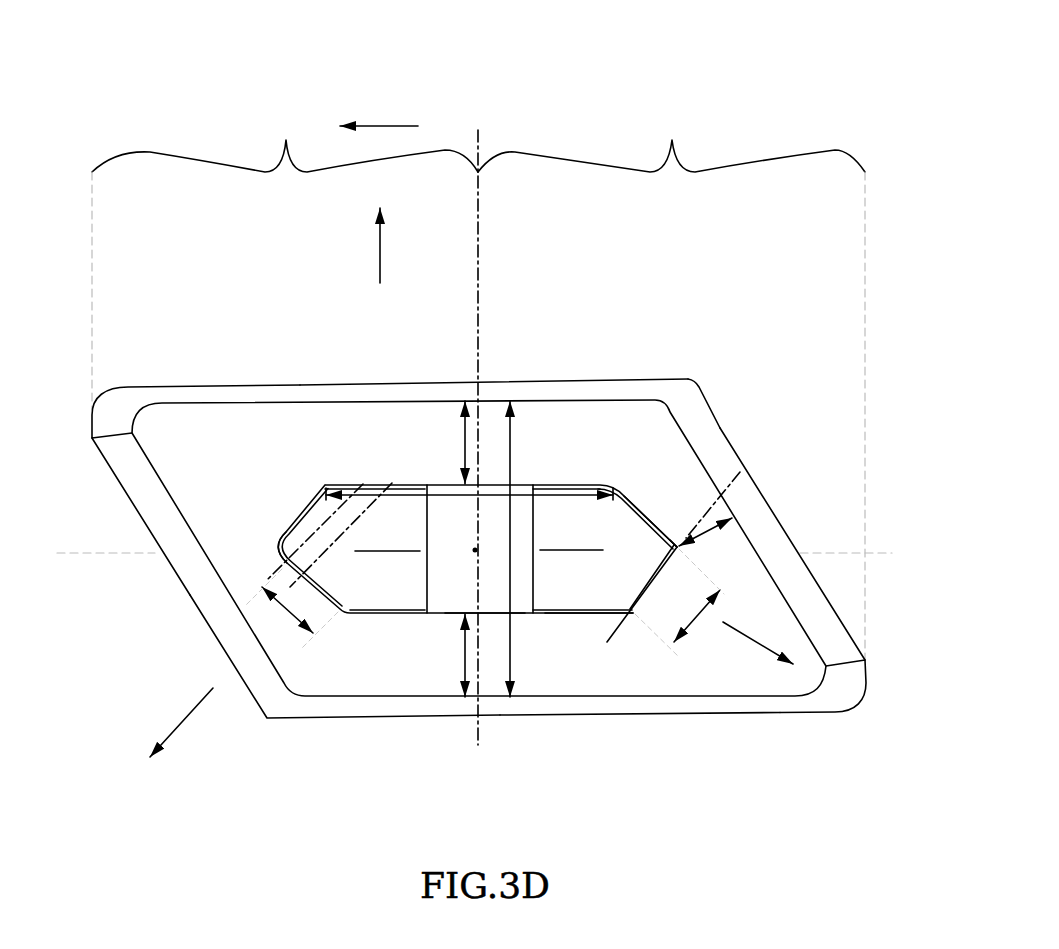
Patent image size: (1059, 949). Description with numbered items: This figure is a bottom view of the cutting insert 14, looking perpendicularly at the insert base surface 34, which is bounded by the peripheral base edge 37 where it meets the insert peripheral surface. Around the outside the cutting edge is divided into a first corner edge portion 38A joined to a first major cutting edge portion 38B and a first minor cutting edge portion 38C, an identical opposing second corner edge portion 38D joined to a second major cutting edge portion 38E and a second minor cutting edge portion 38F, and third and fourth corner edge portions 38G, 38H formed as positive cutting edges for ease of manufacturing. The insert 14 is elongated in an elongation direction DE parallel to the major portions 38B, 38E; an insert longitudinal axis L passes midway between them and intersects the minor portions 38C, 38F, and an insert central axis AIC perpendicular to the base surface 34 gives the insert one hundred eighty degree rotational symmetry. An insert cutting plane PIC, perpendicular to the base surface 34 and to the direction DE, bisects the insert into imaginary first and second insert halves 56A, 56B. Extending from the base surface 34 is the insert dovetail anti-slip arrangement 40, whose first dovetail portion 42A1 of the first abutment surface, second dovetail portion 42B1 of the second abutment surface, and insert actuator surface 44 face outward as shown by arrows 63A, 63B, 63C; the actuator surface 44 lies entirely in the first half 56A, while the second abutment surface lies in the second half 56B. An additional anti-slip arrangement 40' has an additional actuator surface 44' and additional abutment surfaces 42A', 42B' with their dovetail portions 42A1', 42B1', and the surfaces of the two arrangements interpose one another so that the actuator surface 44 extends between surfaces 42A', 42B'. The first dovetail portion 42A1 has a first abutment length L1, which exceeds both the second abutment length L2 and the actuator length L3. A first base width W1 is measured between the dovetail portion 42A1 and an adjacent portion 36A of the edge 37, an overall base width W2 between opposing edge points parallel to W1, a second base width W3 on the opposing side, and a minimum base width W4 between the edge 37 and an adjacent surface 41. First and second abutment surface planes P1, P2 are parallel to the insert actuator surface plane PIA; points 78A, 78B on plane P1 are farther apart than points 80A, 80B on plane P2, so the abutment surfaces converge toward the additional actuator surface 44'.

The cutting insert 14 is at (733, 58).
The insert base surface 34 is at (546, 698).
The adjacent portion of the peripheral base edge 36A is at (465, 385).
The peripheral base edge 37 is at (620, 402).
The first corner edge portion 38A is at (107, 396).
The first major cutting edge portion 38B is at (540, 379).
The first minor cutting edge portion 38C is at (138, 510).
The second corner edge portion 38D is at (857, 707).
The second major cutting edge portion 38E is at (765, 716).
The second minor cutting edge portion 38F is at (778, 526).
The third corner edge portion 38G is at (690, 386).
The fourth corner edge portion 38H is at (270, 720).
The insert dovetail anti-slip arrangement 40 is at (477, 563).
The additional anti-slip arrangement 40' is at (478, 549).
The adjacent surface of the anti-slip arrangement 41 is at (677, 549).
The first dovetail portion 42A1 is at (326, 411).
The second upper slot edge portion 42A1' is at (599, 710).
The additional first insert abutment surface 42A' is at (507, 696).
The first lower slot edge 42B1 is at (375, 646).
The additional second dovetail portion 42B1' is at (606, 456).
The additional second insert abutment surface 42B' is at (710, 468).
The insert actuator surface 44 is at (620, 641).
The additional insert actuator surface 44' is at (267, 528).
The first insert half 56A is at (671, 383).
The second insert half 56B is at (285, 258).
The outwardly directed arrow 63A is at (380, 258).
The outwardly directed arrow 63B is at (185, 722).
The outwardly directed arrow 63C is at (741, 633).
The point on first insert abutment surface plane 78A is at (391, 483).
The point on first insert abutment surface plane 78B is at (298, 580).
The point on second insert abutment surface plane 80A is at (363, 484).
The point on second insert abutment surface plane 80B is at (285, 570).
The first insert abutment surface plane P1 is at (358, 528).
The second insert abutment surface plane P2 is at (302, 522).
The insert cutting plane PIC is at (486, 416).
The insert actuator surface plane PIA is at (740, 472).
The insert central axis AIC is at (474, 549).
The elongation direction DE is at (392, 126).
The insert longitudinal axis L is at (464, 554).
The first insert abutment length L1 is at (524, 493).
The second insert abutment length L2 is at (291, 609).
The actuator length L3 is at (698, 612).
The first base width W1 is at (464, 460).
The overall base width W2 is at (510, 470).
The second base width W3 is at (465, 655).
The minimum base width W4 is at (703, 540).